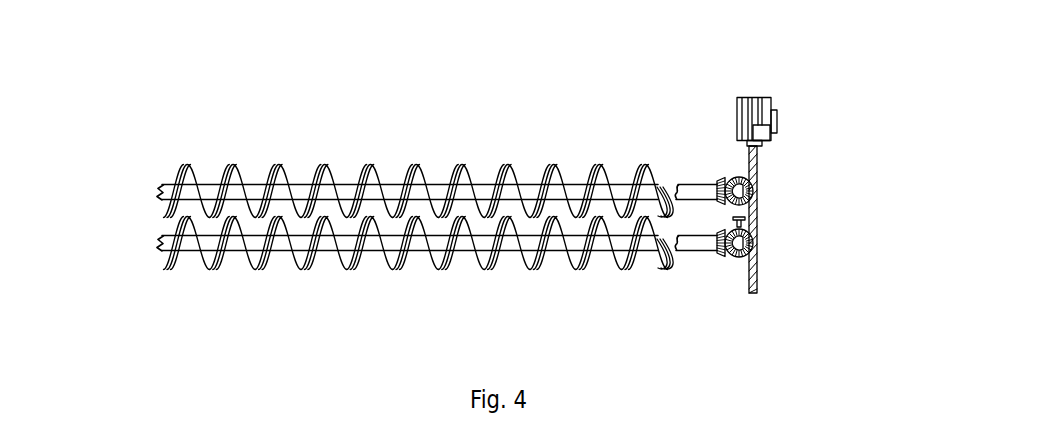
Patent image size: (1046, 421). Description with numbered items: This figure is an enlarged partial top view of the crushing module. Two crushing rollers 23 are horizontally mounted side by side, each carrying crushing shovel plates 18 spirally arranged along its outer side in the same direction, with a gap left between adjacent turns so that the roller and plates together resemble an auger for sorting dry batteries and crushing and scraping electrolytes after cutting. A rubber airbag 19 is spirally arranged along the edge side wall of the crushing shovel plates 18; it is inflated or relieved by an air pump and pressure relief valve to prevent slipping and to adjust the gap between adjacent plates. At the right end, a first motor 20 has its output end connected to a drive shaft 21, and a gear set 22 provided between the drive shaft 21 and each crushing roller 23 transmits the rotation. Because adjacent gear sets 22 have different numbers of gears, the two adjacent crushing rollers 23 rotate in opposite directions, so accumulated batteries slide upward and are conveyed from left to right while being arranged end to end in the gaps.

The crushing shovel plate 18 is at (323, 175).
The rubber airbag 19 is at (640, 167).
The first motor 20 is at (760, 118).
The drive shaft 21 is at (752, 213).
The gear set 22 is at (742, 247).
The crushing roller 23 is at (202, 190).